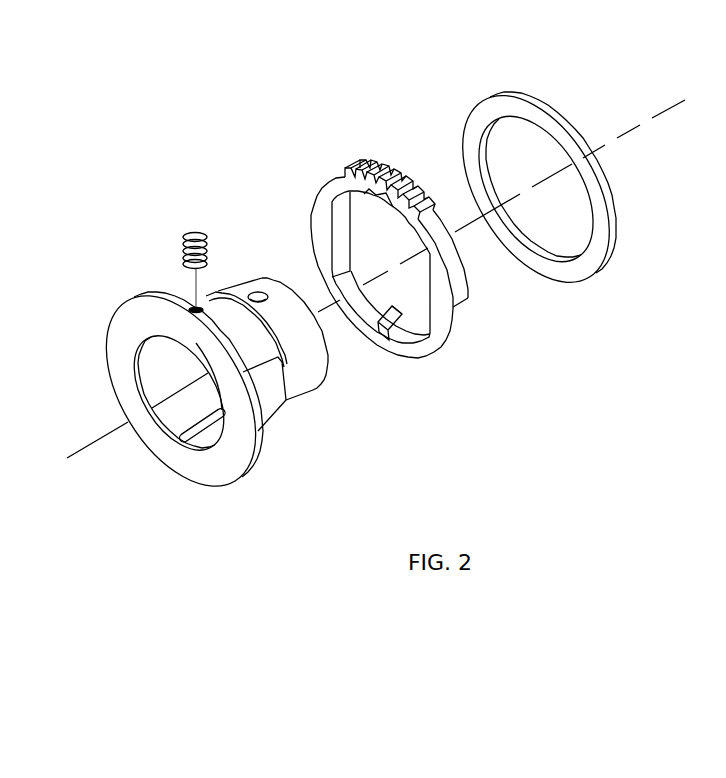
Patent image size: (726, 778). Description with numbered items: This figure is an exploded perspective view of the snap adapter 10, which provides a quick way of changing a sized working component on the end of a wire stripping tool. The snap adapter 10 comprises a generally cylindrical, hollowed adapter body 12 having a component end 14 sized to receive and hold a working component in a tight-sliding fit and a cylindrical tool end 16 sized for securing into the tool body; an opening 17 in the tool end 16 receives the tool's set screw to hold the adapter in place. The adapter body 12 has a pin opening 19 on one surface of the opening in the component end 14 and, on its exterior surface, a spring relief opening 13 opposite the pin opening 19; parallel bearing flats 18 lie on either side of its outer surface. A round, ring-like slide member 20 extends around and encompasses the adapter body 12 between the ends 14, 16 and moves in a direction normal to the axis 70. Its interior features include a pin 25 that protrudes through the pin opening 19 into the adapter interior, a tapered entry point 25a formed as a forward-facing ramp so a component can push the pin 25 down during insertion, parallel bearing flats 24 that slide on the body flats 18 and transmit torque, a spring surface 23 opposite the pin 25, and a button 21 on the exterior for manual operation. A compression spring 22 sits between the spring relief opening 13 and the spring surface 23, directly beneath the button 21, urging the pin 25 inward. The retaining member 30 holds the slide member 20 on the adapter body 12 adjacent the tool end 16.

The snap adapter 10 is at (204, 116).
The adapter body 12 is at (279, 503).
The spring relief opening 13 is at (195, 306).
The component end 14 is at (120, 376).
The tool end 16 is at (313, 381).
The opening 17 is at (254, 291).
The bearing flats 18 is at (276, 408).
The pin opening 19 is at (188, 442).
The slide member 20 is at (465, 306).
The button 21 is at (362, 160).
The compression spring 22 is at (182, 246).
The spring surface 23 is at (368, 195).
The bearing flats 24 is at (343, 232).
The pin 25 is at (382, 342).
The tapered entry point 25a is at (397, 310).
The retaining member 30 is at (528, 106).
The axis 70 is at (668, 110).